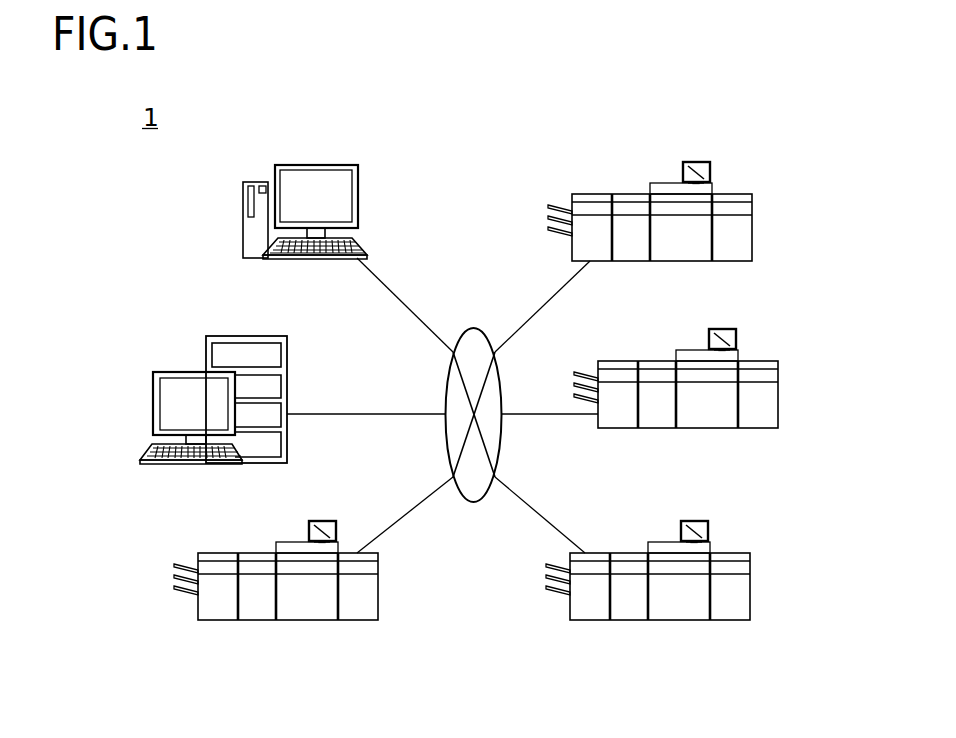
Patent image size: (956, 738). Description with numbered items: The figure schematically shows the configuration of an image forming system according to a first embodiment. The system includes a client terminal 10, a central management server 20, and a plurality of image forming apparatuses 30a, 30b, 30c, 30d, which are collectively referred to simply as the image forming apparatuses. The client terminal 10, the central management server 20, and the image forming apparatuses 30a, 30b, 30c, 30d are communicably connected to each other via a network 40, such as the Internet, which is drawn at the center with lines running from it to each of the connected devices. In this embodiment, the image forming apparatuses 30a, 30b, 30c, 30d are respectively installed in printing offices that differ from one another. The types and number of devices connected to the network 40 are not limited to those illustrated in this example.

The client terminal 10 is at (358, 190).
The central management server 20 is at (287, 354).
The image forming apparatus 30a is at (752, 207).
The image forming apparatus 30b is at (778, 375).
The image forming apparatus 30c is at (750, 567).
The image forming apparatus 30d is at (378, 567).
The network 40 is at (483, 331).